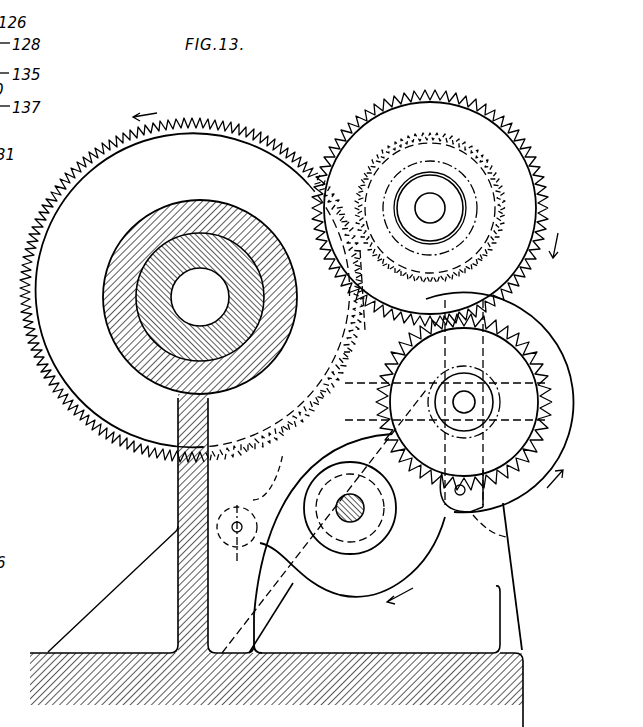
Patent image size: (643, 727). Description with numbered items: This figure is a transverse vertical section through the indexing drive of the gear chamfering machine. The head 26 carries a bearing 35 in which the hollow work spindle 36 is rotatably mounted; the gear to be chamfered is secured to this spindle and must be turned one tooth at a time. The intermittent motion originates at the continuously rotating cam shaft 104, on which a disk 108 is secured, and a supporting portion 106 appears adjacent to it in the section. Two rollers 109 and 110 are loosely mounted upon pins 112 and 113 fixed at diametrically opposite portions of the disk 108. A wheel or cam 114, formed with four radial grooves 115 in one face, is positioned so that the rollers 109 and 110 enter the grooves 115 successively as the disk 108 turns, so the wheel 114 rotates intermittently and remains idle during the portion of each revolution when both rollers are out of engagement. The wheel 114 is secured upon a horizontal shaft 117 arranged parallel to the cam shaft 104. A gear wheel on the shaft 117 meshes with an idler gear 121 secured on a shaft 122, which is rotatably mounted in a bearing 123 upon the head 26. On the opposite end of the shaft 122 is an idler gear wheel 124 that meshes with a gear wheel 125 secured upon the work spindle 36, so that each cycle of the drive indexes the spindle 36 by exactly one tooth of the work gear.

The head 26 is at (48, 651).
The bearing 35 is at (151, 214).
The work spindle 36 is at (179, 317).
The cam shaft 104 is at (351, 512).
The housing wall 106 is at (525, 590).
The disk 108 is at (432, 560).
The roller 109 is at (510, 540).
The roller 110 is at (238, 548).
The pin 112 is at (472, 498).
The pin 113 is at (237, 507).
The grooved wheel 114 is at (560, 443).
The radial grooves 115 is at (480, 322).
The horizontal shaft 117 is at (464, 402).
The idler gear 121 is at (521, 131).
The shaft 122 is at (430, 208).
The bearing 123 is at (378, 205).
The idler gear wheel 124 is at (462, 145).
The gear wheel 125 is at (248, 147).